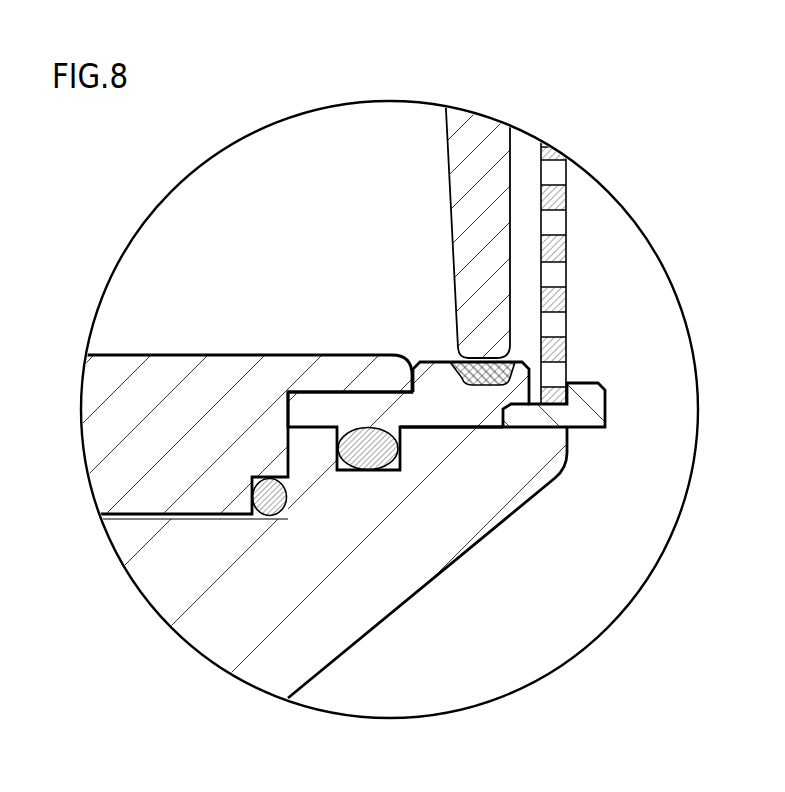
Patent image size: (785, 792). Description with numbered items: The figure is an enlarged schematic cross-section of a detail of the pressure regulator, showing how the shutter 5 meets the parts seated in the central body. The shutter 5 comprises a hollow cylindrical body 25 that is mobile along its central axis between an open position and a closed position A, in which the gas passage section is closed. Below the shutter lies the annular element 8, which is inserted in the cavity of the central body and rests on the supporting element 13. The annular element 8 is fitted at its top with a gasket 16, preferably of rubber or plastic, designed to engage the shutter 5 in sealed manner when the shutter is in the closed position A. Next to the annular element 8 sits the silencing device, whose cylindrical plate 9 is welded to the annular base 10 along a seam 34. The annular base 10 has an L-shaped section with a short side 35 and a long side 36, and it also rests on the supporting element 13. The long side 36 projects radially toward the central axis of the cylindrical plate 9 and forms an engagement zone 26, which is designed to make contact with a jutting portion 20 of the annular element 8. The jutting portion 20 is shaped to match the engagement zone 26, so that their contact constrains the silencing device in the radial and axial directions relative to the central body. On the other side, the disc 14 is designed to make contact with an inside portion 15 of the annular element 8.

The shutter 5 is at (517, 153).
The annular element 8 is at (438, 410).
The cylindrical plate 9 is at (570, 222).
The annular base 10 is at (591, 402).
The supporting element 13 is at (498, 533).
The disc 14 is at (141, 393).
The inside portion 15 is at (328, 410).
The gasket 16 is at (468, 371).
The jutting portion 20 is at (517, 393).
The hollow cylindrical body 25 is at (447, 133).
The engagement zone 26 is at (521, 417).
The seam 34 is at (572, 378).
The short side 35 is at (609, 397).
The long side 36 is at (553, 437).
The closed position A is at (445, 342).